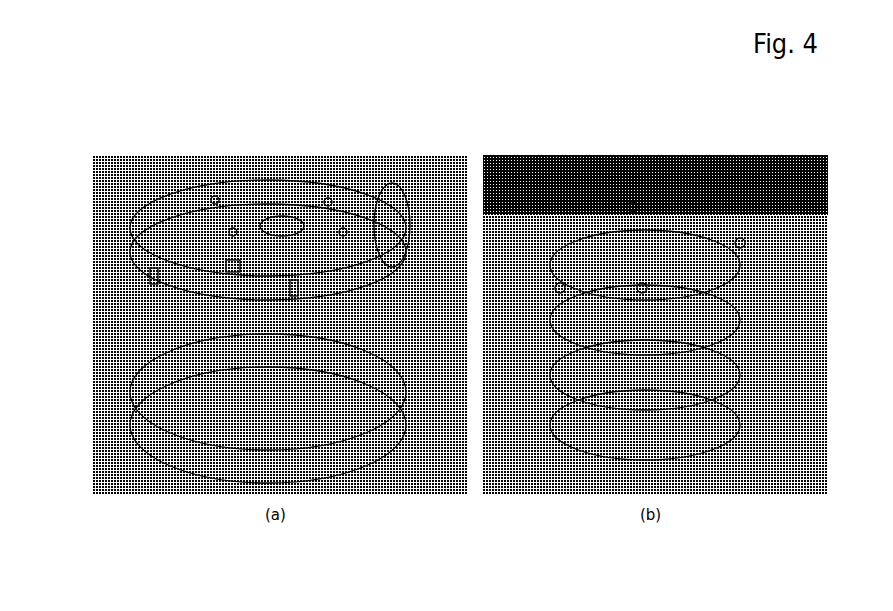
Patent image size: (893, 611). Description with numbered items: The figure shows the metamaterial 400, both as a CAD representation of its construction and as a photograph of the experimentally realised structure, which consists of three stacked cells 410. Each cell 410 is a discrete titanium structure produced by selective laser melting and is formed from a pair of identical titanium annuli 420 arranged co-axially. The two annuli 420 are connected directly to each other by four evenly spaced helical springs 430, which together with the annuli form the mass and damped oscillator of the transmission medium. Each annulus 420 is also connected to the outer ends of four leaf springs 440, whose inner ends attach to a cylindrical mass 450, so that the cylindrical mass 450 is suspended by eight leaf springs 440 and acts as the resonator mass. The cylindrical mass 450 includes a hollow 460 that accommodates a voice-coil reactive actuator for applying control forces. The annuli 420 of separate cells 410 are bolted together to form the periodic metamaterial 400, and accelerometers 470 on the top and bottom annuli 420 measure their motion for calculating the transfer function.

The metamaterial 400 is at (150, 148).
The cell 410 is at (133, 233).
The titanium annulus 420 is at (402, 268).
The helical spring 430 is at (293, 287).
The leaf spring 440 is at (233, 232).
The cylindrical mass 450 is at (232, 266).
The hollow 460 is at (282, 222).
The accelerometer 470 is at (560, 288).